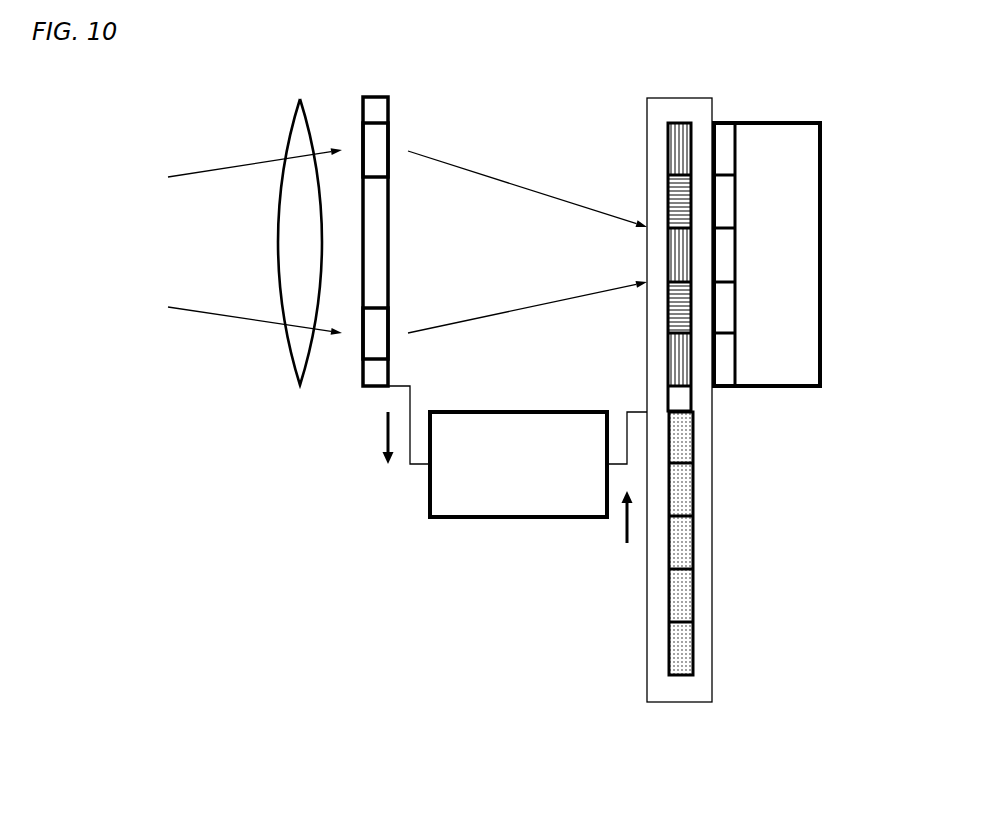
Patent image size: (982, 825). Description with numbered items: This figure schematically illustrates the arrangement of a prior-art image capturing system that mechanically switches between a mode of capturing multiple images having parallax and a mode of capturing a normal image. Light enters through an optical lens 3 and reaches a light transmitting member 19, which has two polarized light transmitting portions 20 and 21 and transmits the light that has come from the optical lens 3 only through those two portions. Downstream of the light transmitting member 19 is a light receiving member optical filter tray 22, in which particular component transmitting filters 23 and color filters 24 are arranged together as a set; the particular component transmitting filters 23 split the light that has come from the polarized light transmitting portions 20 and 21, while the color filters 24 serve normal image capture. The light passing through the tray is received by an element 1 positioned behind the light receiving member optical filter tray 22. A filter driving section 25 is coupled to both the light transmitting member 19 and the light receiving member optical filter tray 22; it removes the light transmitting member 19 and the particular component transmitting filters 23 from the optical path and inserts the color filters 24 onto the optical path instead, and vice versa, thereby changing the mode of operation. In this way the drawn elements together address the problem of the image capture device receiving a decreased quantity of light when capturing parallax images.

The image sensor 1 is at (800, 253).
The optical lens 3 is at (299, 360).
The light transmitting member 19 is at (365, 387).
The polarized light transmitting portion 20 is at (389, 150).
The polarized light transmitting portion 21 is at (389, 335).
The light receiving member optical filter tray 22 is at (647, 98).
The particular component transmitting filters 23 is at (690, 123).
The color filters 24 is at (693, 645).
The filter driving section 25 is at (497, 490).